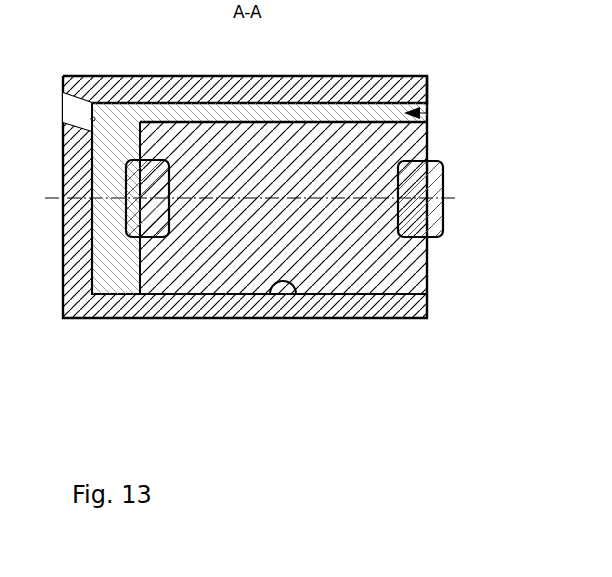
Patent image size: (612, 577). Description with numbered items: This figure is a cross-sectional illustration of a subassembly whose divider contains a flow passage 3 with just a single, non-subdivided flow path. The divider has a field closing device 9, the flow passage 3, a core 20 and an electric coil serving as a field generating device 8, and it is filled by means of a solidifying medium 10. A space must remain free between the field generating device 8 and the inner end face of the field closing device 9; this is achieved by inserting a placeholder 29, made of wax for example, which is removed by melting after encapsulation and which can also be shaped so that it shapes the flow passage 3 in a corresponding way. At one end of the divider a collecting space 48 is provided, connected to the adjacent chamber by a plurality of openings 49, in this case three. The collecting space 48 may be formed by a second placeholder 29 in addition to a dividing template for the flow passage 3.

The field closing device 9 is at (170, 86).
The flow passage 3 is at (428, 113).
The openings 49 is at (63, 103).
The placeholder 29 is at (112, 143).
The field generating device 8 is at (441, 169).
The collecting space 48 is at (107, 268).
The core 20 is at (198, 272).
The solidifying medium 10 is at (284, 290).